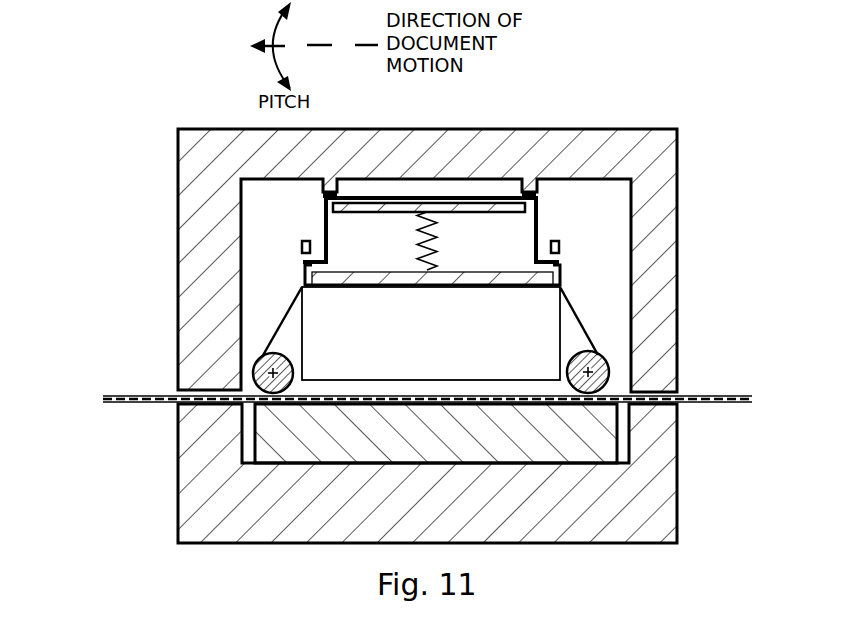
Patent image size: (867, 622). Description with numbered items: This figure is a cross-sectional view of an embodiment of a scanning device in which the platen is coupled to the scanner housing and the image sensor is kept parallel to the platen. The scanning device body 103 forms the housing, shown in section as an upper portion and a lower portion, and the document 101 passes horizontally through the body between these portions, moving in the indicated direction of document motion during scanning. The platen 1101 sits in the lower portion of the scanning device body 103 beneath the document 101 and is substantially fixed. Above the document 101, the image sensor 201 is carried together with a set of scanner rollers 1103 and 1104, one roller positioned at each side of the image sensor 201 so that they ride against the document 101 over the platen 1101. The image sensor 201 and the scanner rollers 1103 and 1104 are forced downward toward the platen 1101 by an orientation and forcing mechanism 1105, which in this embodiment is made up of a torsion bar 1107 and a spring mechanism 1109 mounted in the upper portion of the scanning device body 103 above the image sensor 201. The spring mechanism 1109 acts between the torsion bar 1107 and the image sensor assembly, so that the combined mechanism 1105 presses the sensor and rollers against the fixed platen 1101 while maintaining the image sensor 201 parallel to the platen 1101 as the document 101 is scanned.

The scanning device body 103 is at (605, 128).
The document 101 is at (690, 392).
The image sensor 201 is at (535, 305).
The platen 1101 is at (620, 438).
The scanner roller 1103 is at (600, 365).
The scanner roller 1104 is at (263, 373).
The orientation and forcing mechanism 1105 is at (288, 223).
The torsion bar 1107 is at (330, 212).
The spring mechanism 1109 is at (420, 246).